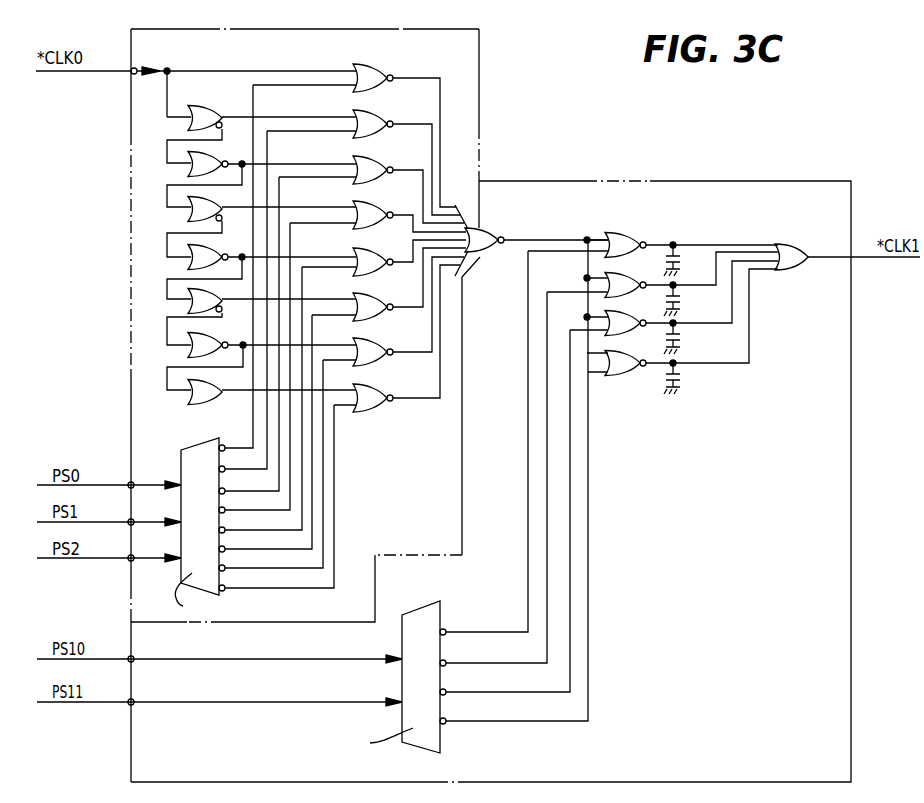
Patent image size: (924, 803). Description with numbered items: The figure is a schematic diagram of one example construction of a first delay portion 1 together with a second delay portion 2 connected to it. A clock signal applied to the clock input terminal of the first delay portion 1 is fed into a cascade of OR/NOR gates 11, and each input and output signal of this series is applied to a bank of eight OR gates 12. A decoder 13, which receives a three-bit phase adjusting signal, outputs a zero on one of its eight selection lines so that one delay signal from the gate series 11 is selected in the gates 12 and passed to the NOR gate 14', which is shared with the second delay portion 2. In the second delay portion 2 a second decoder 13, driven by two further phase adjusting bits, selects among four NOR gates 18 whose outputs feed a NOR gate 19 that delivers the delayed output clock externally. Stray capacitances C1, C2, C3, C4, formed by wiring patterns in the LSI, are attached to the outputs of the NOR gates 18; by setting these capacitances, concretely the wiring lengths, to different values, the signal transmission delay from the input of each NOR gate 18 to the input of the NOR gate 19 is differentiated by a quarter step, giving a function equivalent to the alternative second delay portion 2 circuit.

The first delay portion 1 is at (480, 103).
The second delay portion 2 is at (702, 180).
The OR/NOR gates 11 is at (216, 106).
The OR gates 12 is at (385, 65).
The decoder 13 is at (200, 443).
The NOR gate 14' is at (531, 238).
The NOR gate 18 is at (623, 231).
The NOR gate 19 is at (792, 237).
The stray capacitance C1 is at (683, 259).
The stray capacitance C2 is at (683, 299).
The stray capacitance C3 is at (683, 337).
The stray capacitance C4 is at (683, 377).